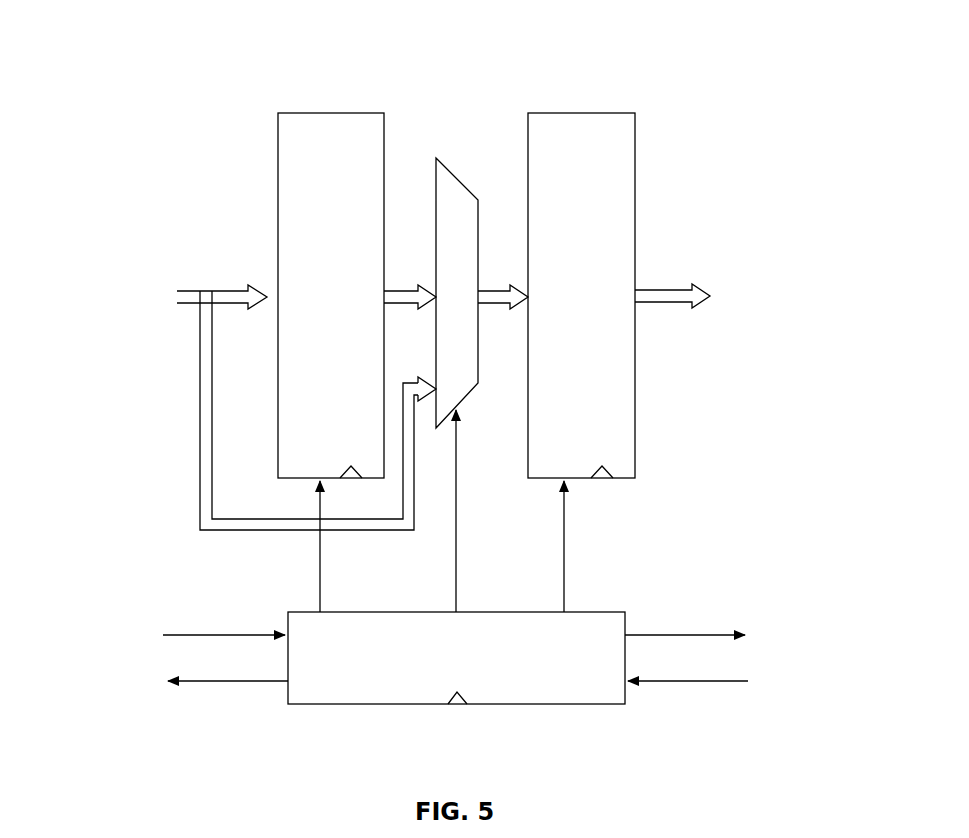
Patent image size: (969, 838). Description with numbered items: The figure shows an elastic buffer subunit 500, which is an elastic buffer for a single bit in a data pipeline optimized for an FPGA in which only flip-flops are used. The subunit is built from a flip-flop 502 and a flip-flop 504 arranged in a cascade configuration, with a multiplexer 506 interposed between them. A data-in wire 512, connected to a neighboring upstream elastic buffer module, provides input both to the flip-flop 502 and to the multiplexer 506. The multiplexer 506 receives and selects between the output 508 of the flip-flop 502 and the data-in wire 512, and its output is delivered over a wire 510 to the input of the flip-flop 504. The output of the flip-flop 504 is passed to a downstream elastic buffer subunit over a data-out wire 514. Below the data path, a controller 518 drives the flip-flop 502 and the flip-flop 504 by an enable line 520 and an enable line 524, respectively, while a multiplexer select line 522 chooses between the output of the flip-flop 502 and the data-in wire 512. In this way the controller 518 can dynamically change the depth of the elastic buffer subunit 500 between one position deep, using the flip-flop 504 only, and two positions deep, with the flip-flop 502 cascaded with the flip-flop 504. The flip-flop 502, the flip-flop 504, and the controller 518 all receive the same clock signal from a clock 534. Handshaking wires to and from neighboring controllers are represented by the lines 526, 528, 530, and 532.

The elastic buffer subunit 500 is at (192, 34).
The flip-flop 502 is at (338, 113).
The flip-flop 504 is at (590, 113).
The multiplexer 506 is at (455, 178).
The output of flip-flop 508 is at (393, 289).
The wire 510 is at (486, 289).
The data-in wire 512 is at (192, 289).
The data-out wire 514 is at (664, 289).
The controller 518 is at (330, 706).
The enable line 520 is at (322, 573).
The multiplexer select line 522 is at (458, 572).
The enable line 524 is at (566, 572).
The handshaking wire 526 is at (213, 632).
The handshaking wire 528 is at (232, 684).
The handshaking wire 530 is at (700, 632).
The handshaking wire 532 is at (675, 684).
The clock 534 is at (452, 708).